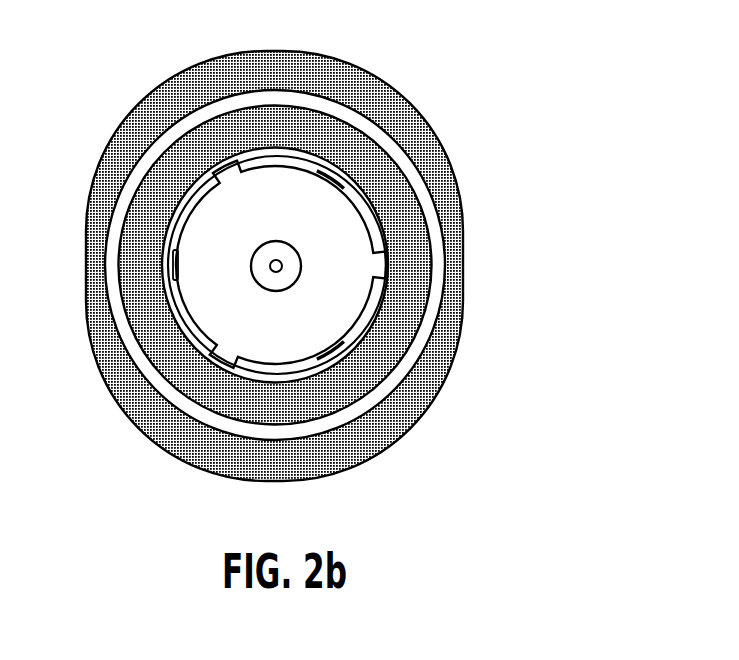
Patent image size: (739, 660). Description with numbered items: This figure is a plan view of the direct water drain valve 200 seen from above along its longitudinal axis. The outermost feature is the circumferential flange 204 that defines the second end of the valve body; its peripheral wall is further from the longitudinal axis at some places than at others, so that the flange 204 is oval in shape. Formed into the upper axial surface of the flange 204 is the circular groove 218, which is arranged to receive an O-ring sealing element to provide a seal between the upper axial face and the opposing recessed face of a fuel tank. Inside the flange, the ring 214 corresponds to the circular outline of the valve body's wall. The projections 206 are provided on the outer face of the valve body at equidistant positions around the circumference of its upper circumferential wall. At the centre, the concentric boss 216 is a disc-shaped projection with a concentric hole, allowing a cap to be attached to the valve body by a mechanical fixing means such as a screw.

The connector assembly 200 is at (322, 266).
The circumferential flange 204 is at (458, 193).
The projections 206 is at (390, 270).
The retaining ring 214 is at (368, 323).
The concentric boss 216 is at (252, 268).
The circular groove 218 is at (395, 145).